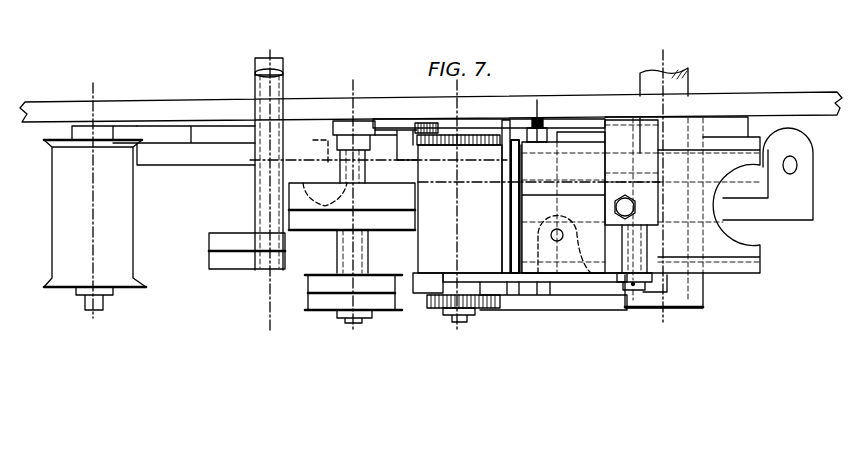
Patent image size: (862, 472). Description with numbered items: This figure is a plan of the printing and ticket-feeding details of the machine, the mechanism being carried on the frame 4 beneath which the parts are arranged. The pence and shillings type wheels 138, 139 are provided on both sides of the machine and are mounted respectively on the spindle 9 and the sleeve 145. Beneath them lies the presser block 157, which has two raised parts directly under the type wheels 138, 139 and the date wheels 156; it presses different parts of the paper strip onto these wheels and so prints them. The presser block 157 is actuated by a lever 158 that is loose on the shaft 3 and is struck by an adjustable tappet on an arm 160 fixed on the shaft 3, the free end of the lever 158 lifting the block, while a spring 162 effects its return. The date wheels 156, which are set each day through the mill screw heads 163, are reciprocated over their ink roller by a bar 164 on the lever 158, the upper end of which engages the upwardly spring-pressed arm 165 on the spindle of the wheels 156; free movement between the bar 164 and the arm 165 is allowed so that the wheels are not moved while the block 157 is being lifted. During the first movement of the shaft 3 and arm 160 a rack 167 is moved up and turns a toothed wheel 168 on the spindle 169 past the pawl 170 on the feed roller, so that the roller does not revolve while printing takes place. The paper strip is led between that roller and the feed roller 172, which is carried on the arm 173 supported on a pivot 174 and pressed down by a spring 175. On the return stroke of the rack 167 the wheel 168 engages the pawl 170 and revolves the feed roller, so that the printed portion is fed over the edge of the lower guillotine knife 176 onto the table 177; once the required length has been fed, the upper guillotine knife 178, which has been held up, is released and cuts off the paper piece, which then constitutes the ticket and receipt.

The shaft 3 is at (650, 82).
The frame rail 4 is at (105, 110).
The spindle 9 is at (255, 63).
The pence type wheel 138 is at (247, 268).
The shillings type wheel 139 is at (226, 238).
The sleeve 145 is at (262, 193).
The date wheel 156 is at (408, 222).
The presser block 157 is at (368, 253).
The lever 158 is at (318, 167).
The arm 160 is at (800, 176).
The spring 162 is at (210, 157).
The mill screw head 163 is at (315, 300).
The bar 164 is at (393, 130).
The spring pressed arm 165 is at (380, 130).
The rack 167 is at (548, 300).
The toothed wheel 168 is at (483, 310).
The spindle 169 is at (458, 317).
The pawl 170 is at (425, 294).
The feed roller 172 is at (455, 205).
The arm 173 is at (497, 130).
The pivot 174 is at (648, 247).
The spring 175 is at (544, 204).
The lower guillotine knife 176 is at (503, 173).
The table 177 is at (722, 160).
The upper guillotine knife 178 is at (512, 255).